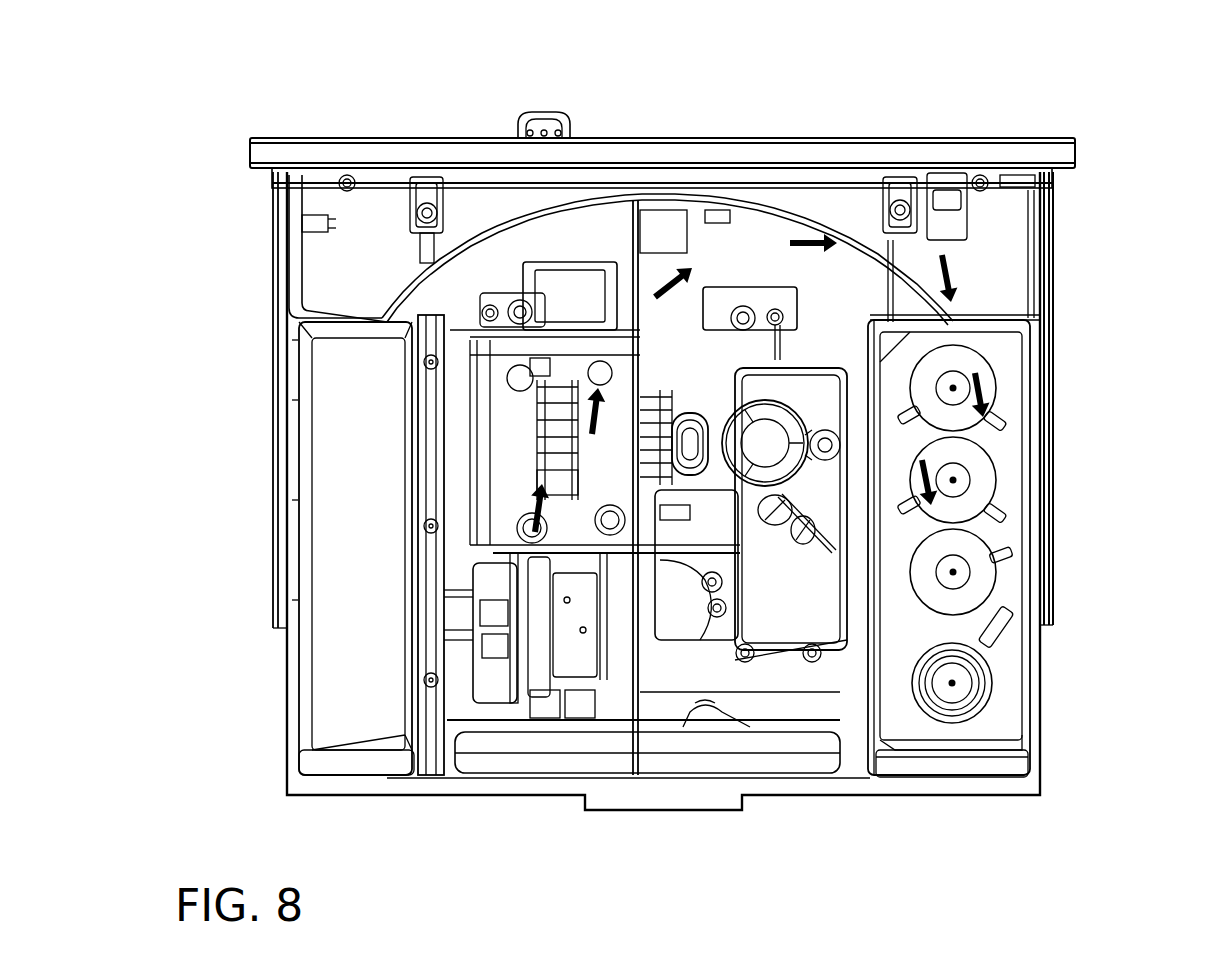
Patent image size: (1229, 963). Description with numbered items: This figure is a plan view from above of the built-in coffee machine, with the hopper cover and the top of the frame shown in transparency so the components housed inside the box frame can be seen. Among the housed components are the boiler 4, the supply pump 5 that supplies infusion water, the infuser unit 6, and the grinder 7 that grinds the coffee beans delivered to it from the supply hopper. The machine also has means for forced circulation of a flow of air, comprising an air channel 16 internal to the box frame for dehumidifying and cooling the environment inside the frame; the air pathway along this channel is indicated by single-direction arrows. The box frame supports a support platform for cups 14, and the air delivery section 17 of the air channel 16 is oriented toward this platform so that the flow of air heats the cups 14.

The boiler 4 is at (587, 472).
The supply pump 5 is at (697, 650).
The infuser unit 6 is at (663, 378).
The grinder 7 is at (767, 447).
The cups 14 is at (952, 683).
The air channel 16 is at (590, 455).
The air delivery section 17 is at (955, 328).